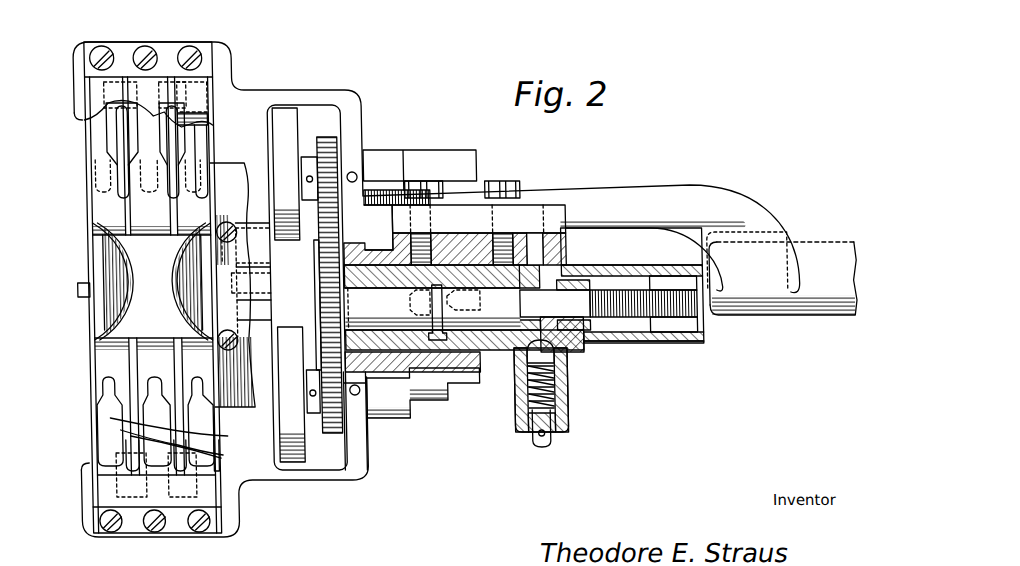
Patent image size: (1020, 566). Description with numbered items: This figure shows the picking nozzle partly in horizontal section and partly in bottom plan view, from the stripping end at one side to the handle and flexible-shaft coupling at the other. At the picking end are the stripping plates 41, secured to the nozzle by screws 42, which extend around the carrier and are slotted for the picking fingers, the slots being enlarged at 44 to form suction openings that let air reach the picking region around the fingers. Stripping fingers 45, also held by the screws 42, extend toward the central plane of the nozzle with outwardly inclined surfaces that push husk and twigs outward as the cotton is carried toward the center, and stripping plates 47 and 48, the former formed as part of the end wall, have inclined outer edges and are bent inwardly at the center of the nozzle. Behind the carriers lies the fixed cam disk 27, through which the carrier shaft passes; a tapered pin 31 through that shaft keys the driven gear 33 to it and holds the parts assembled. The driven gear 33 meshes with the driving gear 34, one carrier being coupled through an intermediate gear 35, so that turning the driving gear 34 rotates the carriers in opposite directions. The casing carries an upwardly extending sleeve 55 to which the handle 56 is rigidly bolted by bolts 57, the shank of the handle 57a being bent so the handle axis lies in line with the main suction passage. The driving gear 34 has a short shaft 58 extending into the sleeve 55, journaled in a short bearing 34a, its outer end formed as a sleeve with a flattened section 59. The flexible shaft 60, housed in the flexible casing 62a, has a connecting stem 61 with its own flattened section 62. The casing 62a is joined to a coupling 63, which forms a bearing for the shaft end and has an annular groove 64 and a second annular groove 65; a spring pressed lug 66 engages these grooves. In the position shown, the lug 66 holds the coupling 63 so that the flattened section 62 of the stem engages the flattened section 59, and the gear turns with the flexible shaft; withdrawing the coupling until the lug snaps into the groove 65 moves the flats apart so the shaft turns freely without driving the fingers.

The fixed cam disk 27 is at (283, 122).
The pin 31 is at (312, 172).
The driven gear 33 is at (340, 140).
The driving gear 34 is at (327, 290).
The short bearing 34a is at (390, 392).
The intermediate gear 35 is at (462, 261).
The stripping plates 41 is at (155, 287).
The screws 42 is at (144, 50).
The enlarged suction openings 44 is at (127, 123).
The stripping fingers 45 is at (196, 110).
The stripping plate 47 is at (130, 271).
The stripping plate 48 is at (194, 304).
The sleeve 55 is at (454, 245).
The handle 56 is at (808, 243).
The bolts 57 is at (489, 181).
The shank of the handle 57a is at (667, 182).
The short shaft 58 is at (433, 312).
The flattened section 59 is at (447, 372).
The flexible shaft 60 is at (587, 287).
The connecting stem 61 is at (513, 363).
The flattened section 62 is at (462, 322).
The flexible casing 62a is at (638, 341).
The coupling 63 is at (562, 352).
The annular groove 64 is at (538, 262).
The second annular groove 65 is at (506, 262).
The spring pressed lug 66 is at (542, 352).